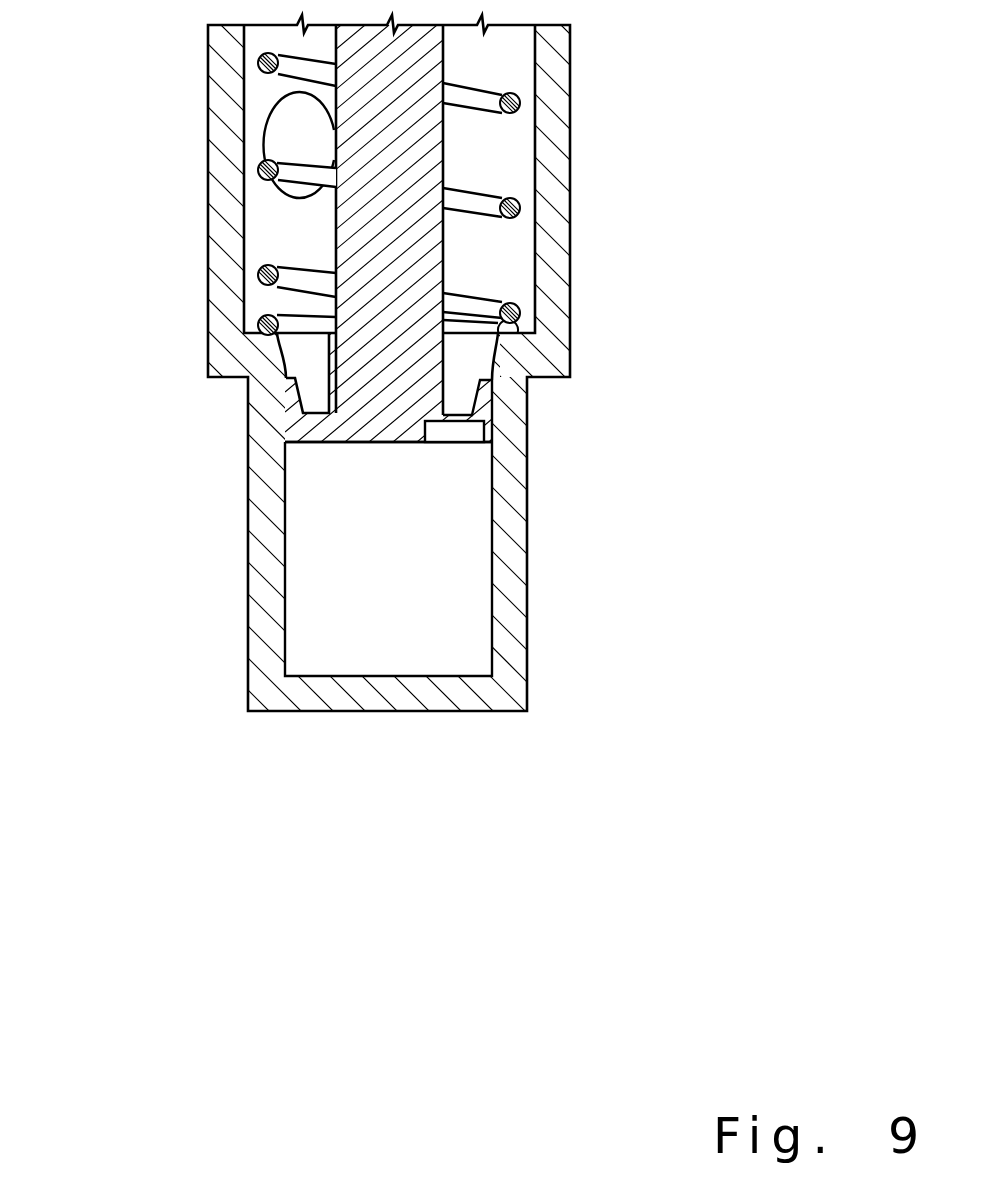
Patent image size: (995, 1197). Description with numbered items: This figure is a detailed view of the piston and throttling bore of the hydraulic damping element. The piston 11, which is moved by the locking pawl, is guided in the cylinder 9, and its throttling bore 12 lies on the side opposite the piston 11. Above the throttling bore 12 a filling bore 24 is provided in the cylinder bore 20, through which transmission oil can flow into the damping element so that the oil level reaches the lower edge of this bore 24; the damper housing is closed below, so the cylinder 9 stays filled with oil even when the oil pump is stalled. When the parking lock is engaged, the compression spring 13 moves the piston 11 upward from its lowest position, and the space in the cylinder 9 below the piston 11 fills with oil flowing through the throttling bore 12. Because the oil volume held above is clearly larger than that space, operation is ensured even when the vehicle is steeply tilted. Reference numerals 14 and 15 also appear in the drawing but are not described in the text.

The cylinder 9 is at (492, 643).
The piston 11 is at (300, 425).
The throttling bore 12 is at (462, 407).
The compression spring 13 is at (520, 100).
The sealing ring 14 is at (467, 433).
The chamber 15 is at (437, 552).
The cylinder bore 20 is at (535, 152).
The filling bore 24 is at (300, 135).